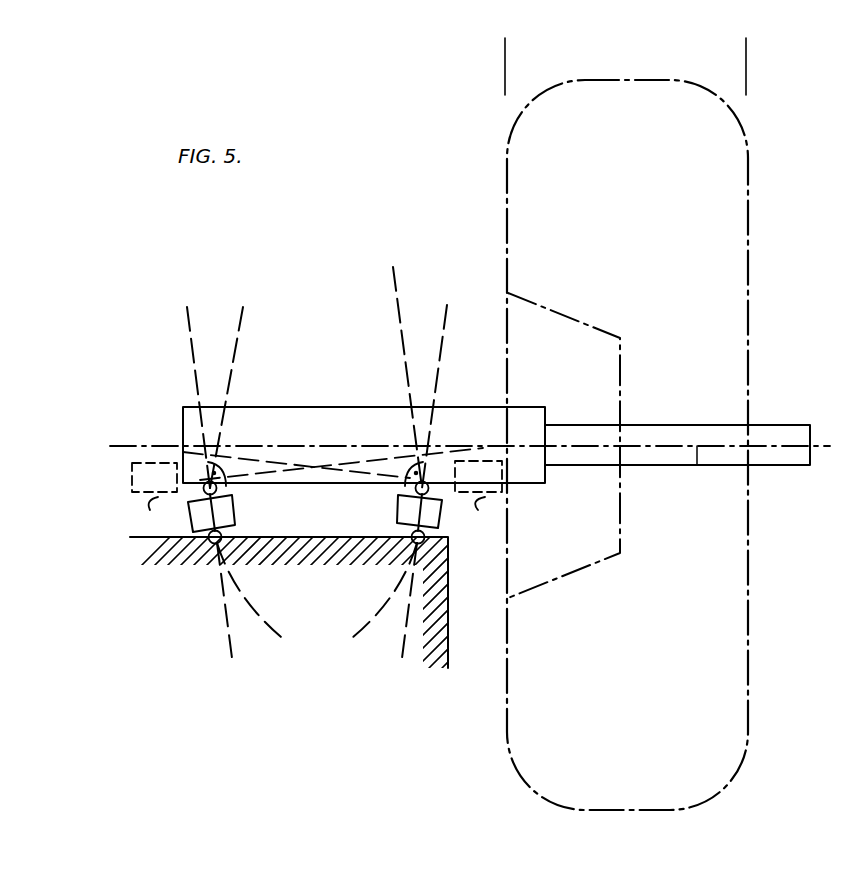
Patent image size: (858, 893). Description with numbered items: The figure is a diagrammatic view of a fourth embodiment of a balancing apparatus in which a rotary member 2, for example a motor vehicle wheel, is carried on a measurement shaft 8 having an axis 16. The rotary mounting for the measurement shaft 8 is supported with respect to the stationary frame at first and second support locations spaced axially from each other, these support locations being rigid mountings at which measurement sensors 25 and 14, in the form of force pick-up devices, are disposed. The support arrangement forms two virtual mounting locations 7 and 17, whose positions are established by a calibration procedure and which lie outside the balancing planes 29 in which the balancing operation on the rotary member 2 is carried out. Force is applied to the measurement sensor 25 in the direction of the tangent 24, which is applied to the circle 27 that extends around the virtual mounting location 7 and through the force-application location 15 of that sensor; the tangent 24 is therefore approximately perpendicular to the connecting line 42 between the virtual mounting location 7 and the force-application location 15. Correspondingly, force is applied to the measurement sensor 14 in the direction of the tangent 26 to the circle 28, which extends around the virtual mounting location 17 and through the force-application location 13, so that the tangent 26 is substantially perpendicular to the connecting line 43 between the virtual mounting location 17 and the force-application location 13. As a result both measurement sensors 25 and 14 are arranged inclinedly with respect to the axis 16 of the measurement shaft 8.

The rotary member 2 is at (742, 318).
The virtual mounting location 7 is at (483, 448).
The measurement shaft 8 is at (710, 430).
The force-application location 13 is at (428, 483).
The measurement sensor 14 is at (400, 512).
The force-application location 15 is at (203, 483).
The axis 16 is at (697, 446).
The virtual mounting location 17 is at (155, 447).
The tangent 24 is at (187, 320).
The measurement sensor 25 is at (200, 527).
The tangent 26 is at (445, 333).
The circle 27 is at (233, 323).
The circle 28 is at (395, 315).
The balancing planes 29 is at (505, 63).
The connecting line 42 is at (352, 463).
The connecting line 43 is at (232, 457).